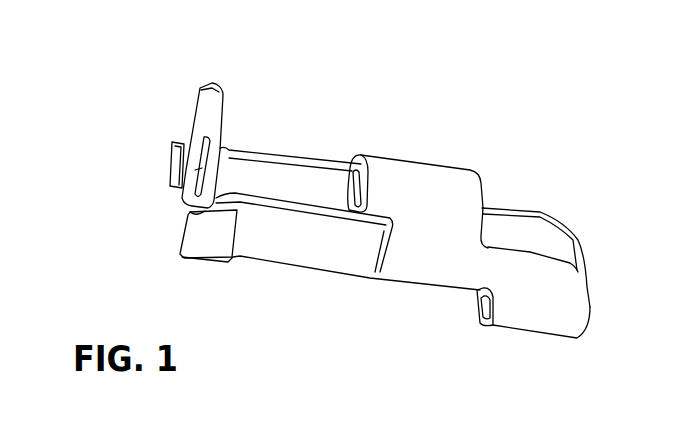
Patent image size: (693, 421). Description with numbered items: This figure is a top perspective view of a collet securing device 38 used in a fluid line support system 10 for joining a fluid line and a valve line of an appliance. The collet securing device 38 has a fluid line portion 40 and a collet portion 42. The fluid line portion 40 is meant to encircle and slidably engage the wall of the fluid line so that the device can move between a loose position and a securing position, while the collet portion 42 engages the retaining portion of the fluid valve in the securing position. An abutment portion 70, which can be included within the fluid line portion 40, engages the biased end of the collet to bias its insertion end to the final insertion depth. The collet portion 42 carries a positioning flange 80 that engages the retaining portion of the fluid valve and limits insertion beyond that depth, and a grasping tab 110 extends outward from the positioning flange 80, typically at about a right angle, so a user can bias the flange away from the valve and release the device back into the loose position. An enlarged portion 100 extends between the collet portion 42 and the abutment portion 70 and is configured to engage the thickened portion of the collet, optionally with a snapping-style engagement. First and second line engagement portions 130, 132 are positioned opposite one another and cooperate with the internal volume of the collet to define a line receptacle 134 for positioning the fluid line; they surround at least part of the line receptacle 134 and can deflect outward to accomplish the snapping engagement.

The fluid line support system 10 is at (573, 135).
The collet securing device 38 is at (435, 157).
The fluid line portion 40 is at (537, 210).
The collet portion 42 is at (182, 208).
The abutment portion 70 is at (352, 157).
The positioning flange 80 is at (207, 110).
The enlarged portion 100 is at (268, 242).
The grasping tab 110 is at (203, 84).
The first line engagement portion 130 is at (515, 307).
The second line engagement portion 132 is at (462, 195).
The line receptacle 134 is at (545, 240).